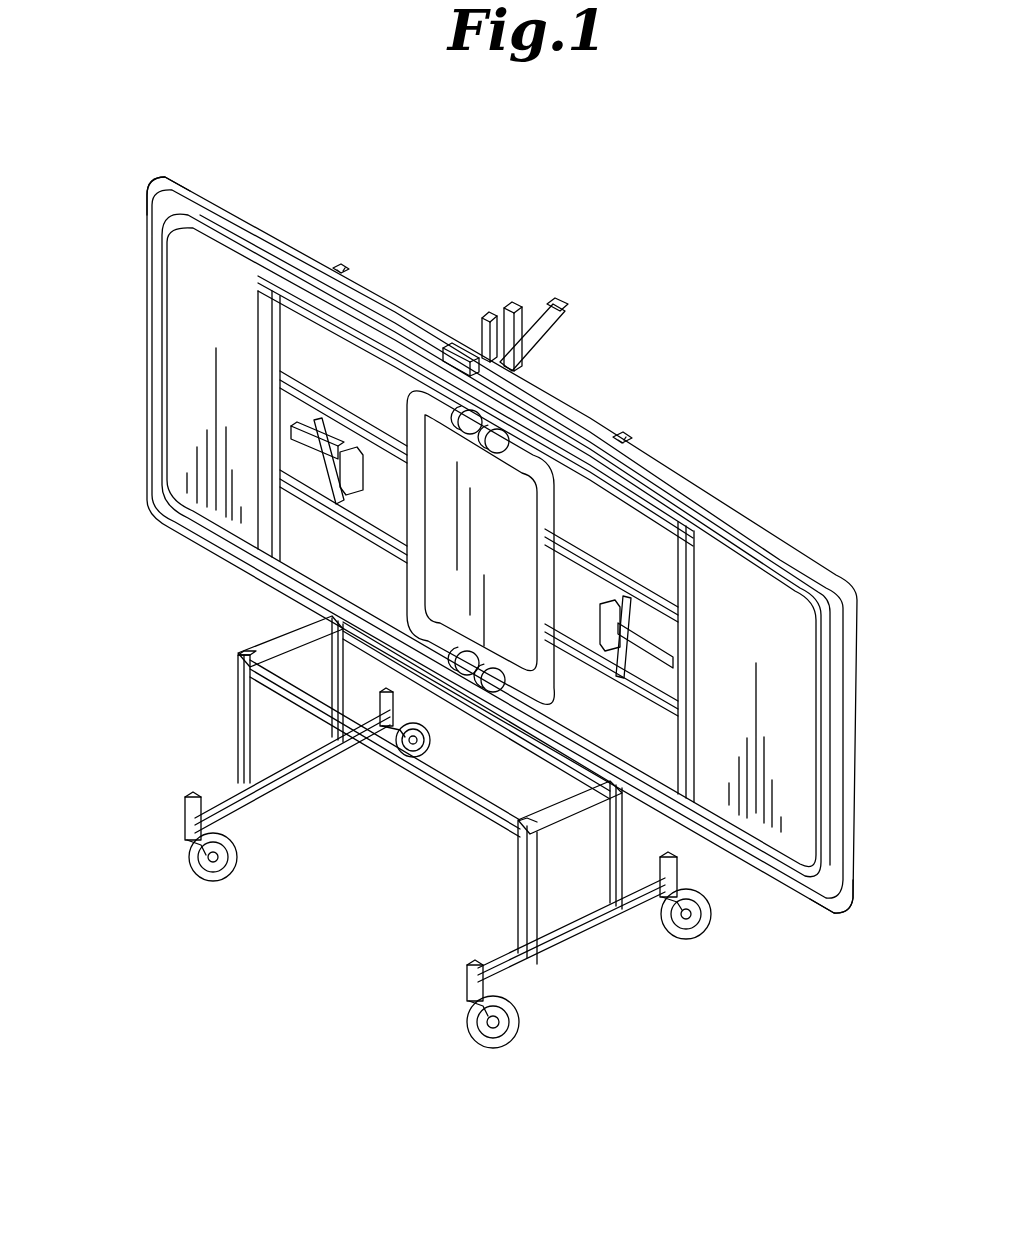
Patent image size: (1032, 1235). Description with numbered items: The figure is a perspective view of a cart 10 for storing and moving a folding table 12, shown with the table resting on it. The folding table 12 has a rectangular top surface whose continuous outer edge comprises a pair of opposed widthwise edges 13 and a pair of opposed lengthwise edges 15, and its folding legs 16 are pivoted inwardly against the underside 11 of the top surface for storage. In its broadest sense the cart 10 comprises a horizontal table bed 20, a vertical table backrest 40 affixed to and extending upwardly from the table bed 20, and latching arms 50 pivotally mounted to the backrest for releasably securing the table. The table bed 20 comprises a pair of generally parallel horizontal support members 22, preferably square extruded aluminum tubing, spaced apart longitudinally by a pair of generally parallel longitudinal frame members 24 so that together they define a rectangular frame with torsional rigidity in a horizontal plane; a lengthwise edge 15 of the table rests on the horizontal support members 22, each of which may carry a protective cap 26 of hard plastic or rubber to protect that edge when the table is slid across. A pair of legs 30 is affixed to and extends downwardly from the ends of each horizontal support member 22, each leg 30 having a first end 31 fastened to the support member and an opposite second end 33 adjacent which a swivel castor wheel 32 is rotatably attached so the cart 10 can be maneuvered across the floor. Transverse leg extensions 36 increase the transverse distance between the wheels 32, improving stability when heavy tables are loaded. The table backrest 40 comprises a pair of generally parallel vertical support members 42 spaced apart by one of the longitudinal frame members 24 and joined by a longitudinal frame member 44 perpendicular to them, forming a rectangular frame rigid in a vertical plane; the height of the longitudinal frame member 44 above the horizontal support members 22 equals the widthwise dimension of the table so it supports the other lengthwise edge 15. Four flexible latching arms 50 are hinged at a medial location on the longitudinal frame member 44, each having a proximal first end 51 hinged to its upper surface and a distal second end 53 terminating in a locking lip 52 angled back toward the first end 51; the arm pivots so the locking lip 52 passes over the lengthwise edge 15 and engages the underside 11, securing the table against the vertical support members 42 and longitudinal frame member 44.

The cart 10 is at (322, 916).
The underside 11 is at (733, 641).
The folding table 12 is at (831, 527).
The widthwise edges 13 is at (147, 203).
The lengthwise edges 15 is at (203, 193).
The folding legs 16 is at (257, 325).
The table bed 20 is at (612, 972).
The horizontal support members 22 is at (597, 812).
The longitudinal frame members 24 is at (453, 718).
The protective cap 26 is at (268, 624).
The legs 30 is at (517, 905).
The first end 31 is at (238, 668).
The wheels 32 is at (197, 875).
The second end 33 is at (236, 773).
The transverse leg extensions 36 is at (288, 773).
The table backrest 40 is at (630, 372).
The vertical support members 42 is at (340, 266).
The longitudinal frame member 44 is at (413, 310).
The latching arm 50 is at (538, 312).
The first end 51 is at (518, 360).
The locking lip 52 is at (557, 300).
The second end 53 is at (569, 307).